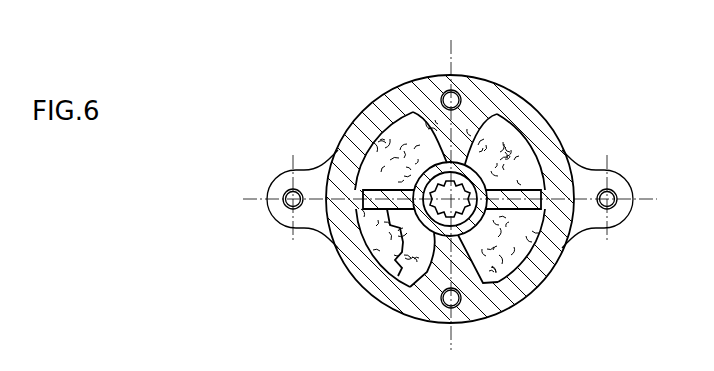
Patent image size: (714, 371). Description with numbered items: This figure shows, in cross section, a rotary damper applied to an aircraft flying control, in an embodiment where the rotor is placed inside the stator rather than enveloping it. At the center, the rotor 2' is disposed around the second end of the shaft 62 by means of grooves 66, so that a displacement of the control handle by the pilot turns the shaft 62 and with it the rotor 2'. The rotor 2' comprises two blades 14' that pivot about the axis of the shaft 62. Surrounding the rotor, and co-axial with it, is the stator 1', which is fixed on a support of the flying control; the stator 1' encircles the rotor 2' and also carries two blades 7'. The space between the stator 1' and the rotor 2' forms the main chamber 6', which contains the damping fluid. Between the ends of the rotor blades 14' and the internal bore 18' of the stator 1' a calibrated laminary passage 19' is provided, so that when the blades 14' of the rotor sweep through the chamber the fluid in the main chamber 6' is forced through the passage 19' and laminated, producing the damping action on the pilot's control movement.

The stator 1' is at (417, 173).
The blades of the stator 7' is at (473, 85).
The rotor 2' is at (493, 164).
The blades of the rotor 14' is at (372, 147).
The grooves 66 is at (417, 212).
The shaft 62 is at (428, 228).
The calibrated laminary passage 19' is at (544, 249).
The main chamber 6' is at (468, 217).
The internal bore of the stator 18' is at (495, 310).